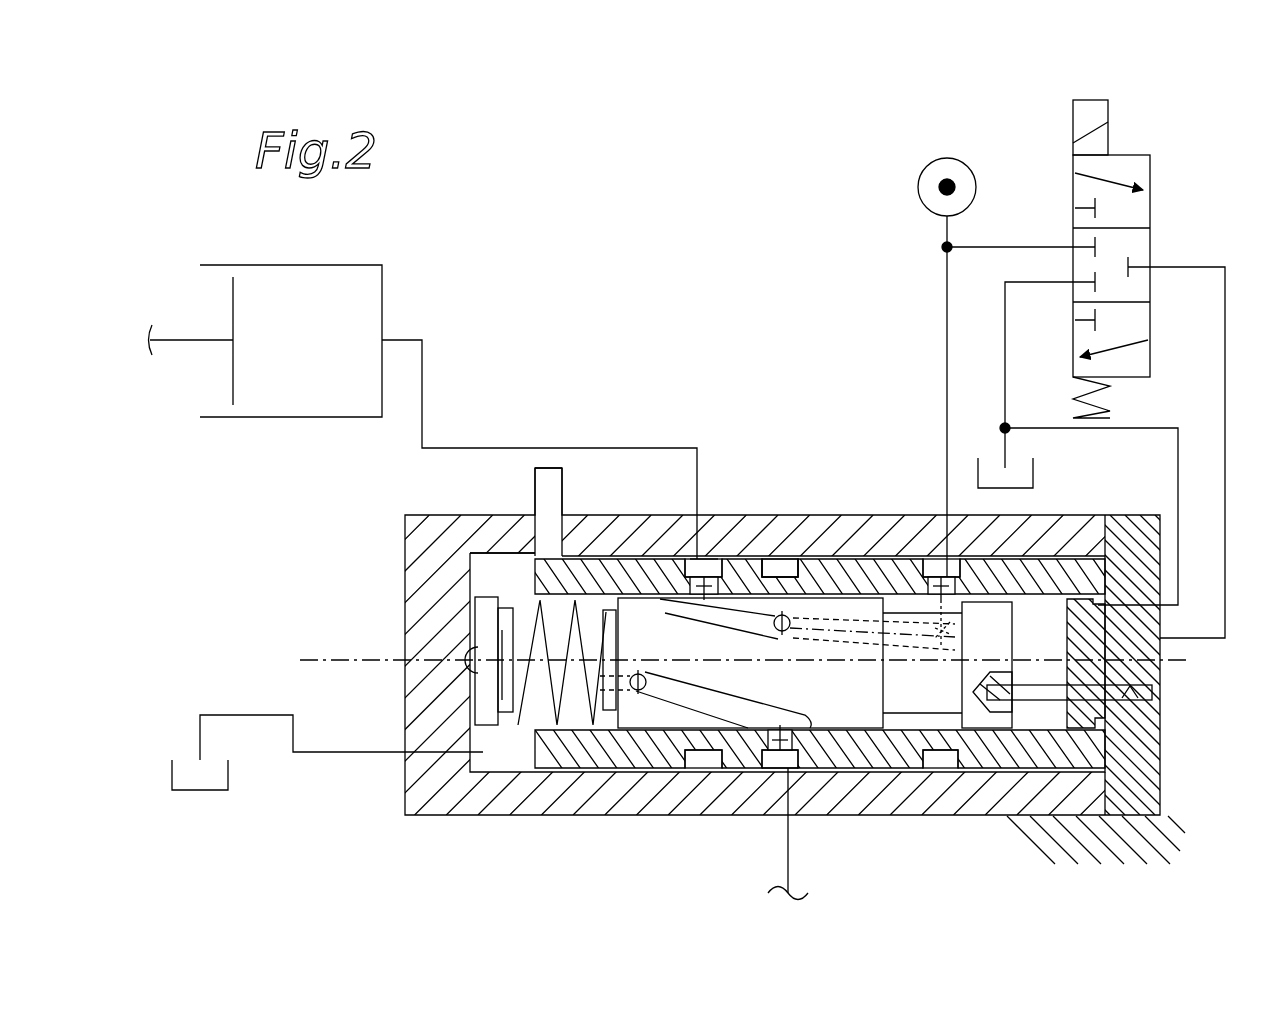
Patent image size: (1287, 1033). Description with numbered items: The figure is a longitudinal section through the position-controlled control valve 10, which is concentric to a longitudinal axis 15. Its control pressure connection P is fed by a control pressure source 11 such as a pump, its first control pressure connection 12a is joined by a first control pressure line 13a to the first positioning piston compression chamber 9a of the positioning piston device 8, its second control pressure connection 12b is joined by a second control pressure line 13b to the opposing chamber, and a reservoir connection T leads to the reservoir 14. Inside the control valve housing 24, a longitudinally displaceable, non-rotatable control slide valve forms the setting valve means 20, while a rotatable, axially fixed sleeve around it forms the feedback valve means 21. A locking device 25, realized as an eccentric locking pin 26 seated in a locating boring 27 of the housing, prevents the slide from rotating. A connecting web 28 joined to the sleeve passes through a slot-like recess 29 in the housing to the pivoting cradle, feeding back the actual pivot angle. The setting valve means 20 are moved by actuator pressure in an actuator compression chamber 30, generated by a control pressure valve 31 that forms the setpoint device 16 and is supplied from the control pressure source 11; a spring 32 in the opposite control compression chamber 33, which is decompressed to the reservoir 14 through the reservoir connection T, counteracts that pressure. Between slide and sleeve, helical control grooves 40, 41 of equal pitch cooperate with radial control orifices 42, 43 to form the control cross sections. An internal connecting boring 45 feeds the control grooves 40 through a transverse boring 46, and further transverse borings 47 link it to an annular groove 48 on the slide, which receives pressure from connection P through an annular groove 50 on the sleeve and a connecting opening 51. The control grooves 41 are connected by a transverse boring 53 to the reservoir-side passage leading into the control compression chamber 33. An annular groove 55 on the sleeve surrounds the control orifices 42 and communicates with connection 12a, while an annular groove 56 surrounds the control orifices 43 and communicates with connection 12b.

The positioning piston device 8 is at (345, 265).
The first positioning piston compression chamber 9a is at (340, 377).
The control valve 10 is at (770, 383).
The control pressure source 11 is at (924, 178).
The first control pressure connection 12a is at (697, 507).
The second control pressure connection 12b is at (790, 818).
The first control pressure line 13a is at (425, 385).
The second control pressure line 13b is at (805, 880).
The reservoir 14 is at (170, 776).
The longitudinal axis 15 is at (314, 648).
The setpoint device 16 is at (1067, 160).
The setting valve means 20 is at (623, 718).
The feedback valve means 21 is at (597, 578).
The control valve housing 24 is at (408, 800).
The locking device 25 is at (1032, 830).
The locking pin 26 is at (1162, 663).
The locating boring 27 is at (1162, 698).
The connecting web 28 is at (545, 488).
The slot-like recess 29 is at (520, 540).
The actuator compression chamber 30 is at (1058, 636).
The control pressure valve 31 is at (1128, 167).
The spring 32 is at (515, 702).
The control compression chamber 33 is at (495, 758).
The helical control groove 40 is at (645, 612).
The helical control groove 41 is at (755, 706).
The control orifice 42 is at (690, 590).
The control orifice 43 is at (760, 748).
The internal connecting boring 45 is at (863, 646).
The transverse boring 46 is at (777, 615).
The transverse boring 47 is at (925, 622).
The annular groove 48 is at (897, 610).
The annular groove 50 is at (942, 768).
The connecting opening 51 is at (1022, 528).
The transverse boring 53 is at (666, 682).
The annular groove 55 is at (700, 765).
The annular groove 56 is at (782, 572).
The control pressure connection P is at (943, 500).
The reservoir connection T is at (402, 750).